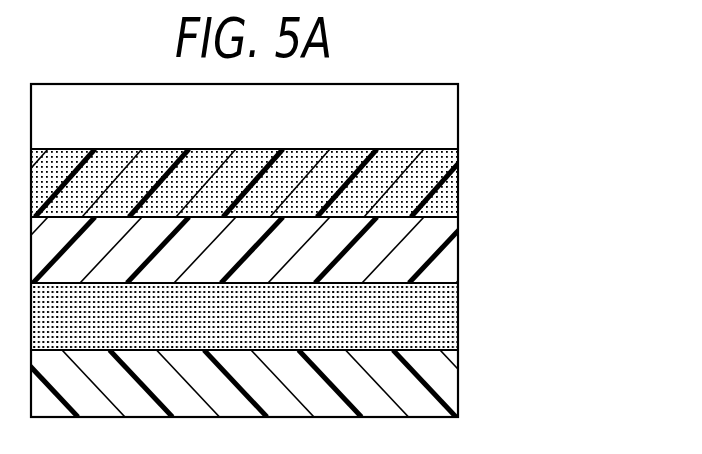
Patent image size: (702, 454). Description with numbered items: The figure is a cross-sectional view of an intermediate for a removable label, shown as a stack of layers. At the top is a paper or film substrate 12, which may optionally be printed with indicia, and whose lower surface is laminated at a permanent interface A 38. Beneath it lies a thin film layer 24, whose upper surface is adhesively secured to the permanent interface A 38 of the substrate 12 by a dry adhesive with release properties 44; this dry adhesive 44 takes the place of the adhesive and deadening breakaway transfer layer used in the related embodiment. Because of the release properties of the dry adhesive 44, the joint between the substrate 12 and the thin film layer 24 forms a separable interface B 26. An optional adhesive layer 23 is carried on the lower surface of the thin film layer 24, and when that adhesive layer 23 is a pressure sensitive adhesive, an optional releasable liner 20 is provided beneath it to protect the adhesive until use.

The paper or film substrate 12 is at (458, 112).
The permanent interface A 38 is at (458, 152).
The dry adhesive with release properties 44 is at (458, 172).
The separable interface B 26 is at (458, 218).
The thin film layer 24 is at (458, 238).
The adhesive layer 23 is at (458, 320).
The releasable liner 20 is at (458, 375).